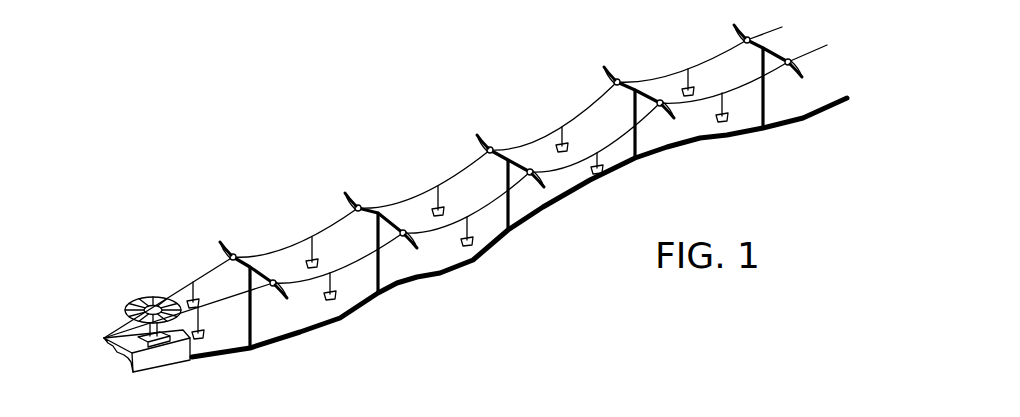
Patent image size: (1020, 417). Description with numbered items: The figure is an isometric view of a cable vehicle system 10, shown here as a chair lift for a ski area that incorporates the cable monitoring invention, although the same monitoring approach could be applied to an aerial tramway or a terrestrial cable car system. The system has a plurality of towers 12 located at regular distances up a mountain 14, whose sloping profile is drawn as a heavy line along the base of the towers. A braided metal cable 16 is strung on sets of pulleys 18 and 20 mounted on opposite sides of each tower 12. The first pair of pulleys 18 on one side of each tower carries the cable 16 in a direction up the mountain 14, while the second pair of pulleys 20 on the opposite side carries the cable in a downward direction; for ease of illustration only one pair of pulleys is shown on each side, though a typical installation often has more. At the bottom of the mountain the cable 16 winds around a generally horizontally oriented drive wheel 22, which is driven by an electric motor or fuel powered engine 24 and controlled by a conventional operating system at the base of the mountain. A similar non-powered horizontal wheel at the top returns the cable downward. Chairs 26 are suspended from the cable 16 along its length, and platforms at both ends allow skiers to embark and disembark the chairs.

The cable vehicle system 10 is at (499, 277).
The tower 12 is at (253, 300).
The mountain 14 is at (337, 323).
The braided metal cable 16 is at (226, 300).
The first pair of pulleys 18 is at (287, 298).
The second pair of pulleys 20 is at (220, 242).
The drive wheel 22 is at (137, 300).
The engine 24 is at (162, 336).
The chair 26 is at (317, 264).